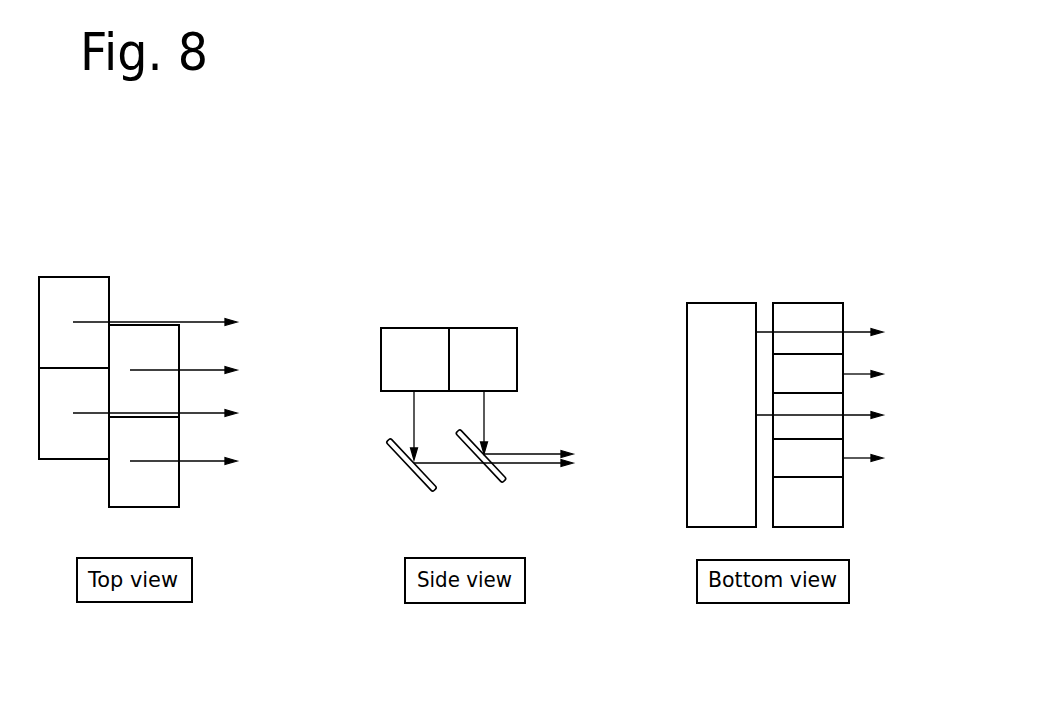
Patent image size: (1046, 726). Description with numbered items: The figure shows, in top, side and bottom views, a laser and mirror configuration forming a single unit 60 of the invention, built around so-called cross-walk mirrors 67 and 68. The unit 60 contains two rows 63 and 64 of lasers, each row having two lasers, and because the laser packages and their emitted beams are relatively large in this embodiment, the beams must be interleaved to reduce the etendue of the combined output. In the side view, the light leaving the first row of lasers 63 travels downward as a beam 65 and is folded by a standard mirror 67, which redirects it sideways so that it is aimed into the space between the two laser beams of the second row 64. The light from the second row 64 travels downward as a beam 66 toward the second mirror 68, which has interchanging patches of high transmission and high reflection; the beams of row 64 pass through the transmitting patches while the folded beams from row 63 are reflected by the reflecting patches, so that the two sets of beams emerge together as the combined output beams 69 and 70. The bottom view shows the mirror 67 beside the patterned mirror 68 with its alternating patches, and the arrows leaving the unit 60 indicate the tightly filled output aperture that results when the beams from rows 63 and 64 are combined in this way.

The unit 60 is at (278, 352).
The first row of lasers 63 is at (78, 287).
The second row of lasers 64 is at (165, 503).
The first light beam 65 is at (414, 426).
The second light beam 66 is at (484, 412).
The standard mirror 67 is at (432, 483).
The mirror with interchanging patches 68 is at (500, 479).
The reflected beam 69 is at (542, 454).
The reflected beam 70 is at (540, 465).